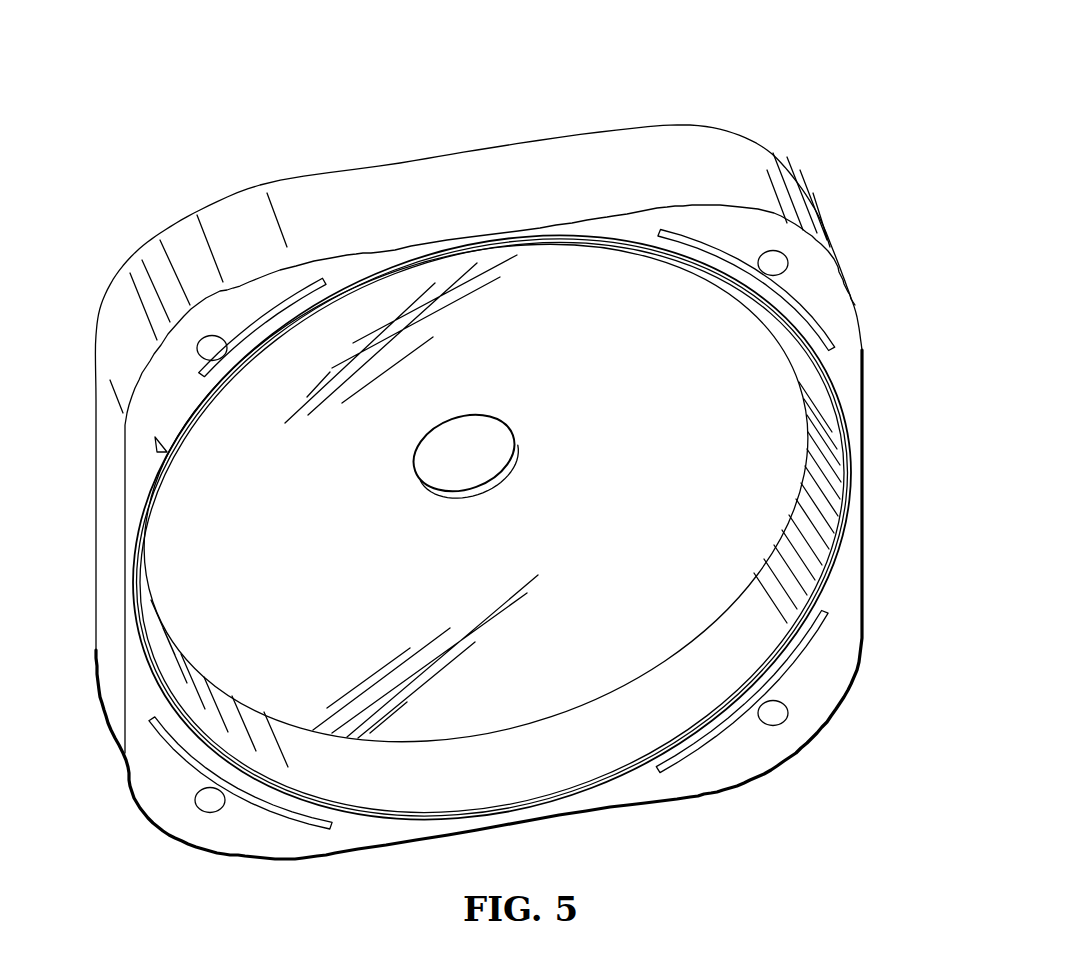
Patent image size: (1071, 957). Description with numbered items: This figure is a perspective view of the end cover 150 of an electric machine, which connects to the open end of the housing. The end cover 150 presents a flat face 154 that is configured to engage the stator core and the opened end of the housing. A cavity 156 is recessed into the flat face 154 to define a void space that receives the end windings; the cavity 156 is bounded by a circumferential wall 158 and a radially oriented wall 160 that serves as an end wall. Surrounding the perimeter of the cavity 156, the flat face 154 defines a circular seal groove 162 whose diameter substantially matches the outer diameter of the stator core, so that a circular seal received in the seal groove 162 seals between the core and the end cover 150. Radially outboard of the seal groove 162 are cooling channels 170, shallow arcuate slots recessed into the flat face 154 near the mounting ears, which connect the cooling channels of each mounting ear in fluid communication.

The end cover 150 is at (703, 108).
The flat face 154 is at (830, 303).
The cavity 156 is at (764, 458).
The circumferential wall 158 is at (701, 683).
The radially oriented wall 160 is at (214, 608).
The seal groove 162 is at (130, 548).
The cooling channels 170 is at (203, 385).